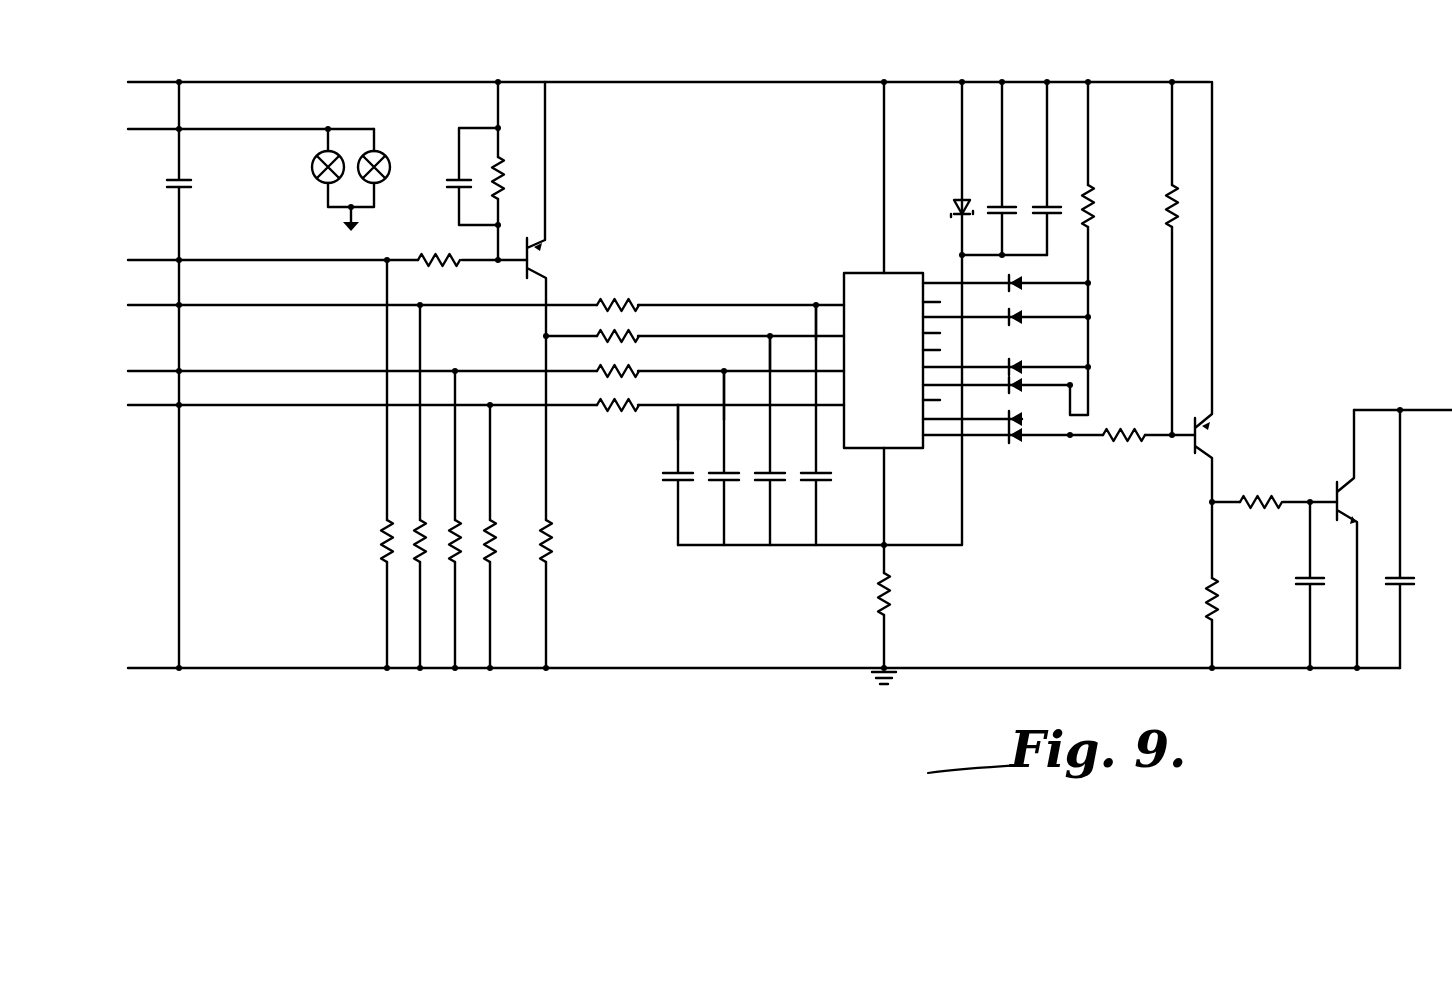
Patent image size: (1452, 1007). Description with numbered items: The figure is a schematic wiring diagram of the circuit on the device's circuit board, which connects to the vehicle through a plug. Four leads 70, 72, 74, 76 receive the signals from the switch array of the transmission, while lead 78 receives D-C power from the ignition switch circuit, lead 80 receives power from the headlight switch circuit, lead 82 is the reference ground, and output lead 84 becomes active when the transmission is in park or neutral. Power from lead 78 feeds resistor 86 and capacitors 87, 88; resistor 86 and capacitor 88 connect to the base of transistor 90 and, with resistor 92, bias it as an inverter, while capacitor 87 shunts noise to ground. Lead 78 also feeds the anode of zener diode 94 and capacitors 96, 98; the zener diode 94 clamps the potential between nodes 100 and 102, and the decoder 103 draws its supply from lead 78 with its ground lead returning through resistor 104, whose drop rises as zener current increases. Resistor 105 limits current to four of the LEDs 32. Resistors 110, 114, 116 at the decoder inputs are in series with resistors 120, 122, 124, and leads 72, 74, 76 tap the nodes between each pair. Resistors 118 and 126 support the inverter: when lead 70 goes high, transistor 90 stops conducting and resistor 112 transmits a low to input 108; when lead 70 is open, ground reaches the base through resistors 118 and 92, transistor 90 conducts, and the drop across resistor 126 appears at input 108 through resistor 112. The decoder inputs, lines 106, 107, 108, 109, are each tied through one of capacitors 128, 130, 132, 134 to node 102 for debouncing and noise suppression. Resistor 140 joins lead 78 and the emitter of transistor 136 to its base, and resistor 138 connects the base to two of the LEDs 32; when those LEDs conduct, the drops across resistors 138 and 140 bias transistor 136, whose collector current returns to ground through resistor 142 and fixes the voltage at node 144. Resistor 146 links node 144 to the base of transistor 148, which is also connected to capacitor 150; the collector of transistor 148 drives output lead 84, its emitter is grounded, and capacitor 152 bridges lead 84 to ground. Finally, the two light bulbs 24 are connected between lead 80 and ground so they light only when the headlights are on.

The light bulbs 24 is at (312, 186).
The LEDs 32 is at (1025, 283).
The lead 70 is at (152, 260).
The lead 72 is at (148, 318).
The lead 74 is at (150, 384).
The lead 76 is at (152, 407).
The lead 78 is at (128, 82).
The lead 80 is at (124, 142).
The lead 82 is at (130, 668).
The output lead 84 is at (1438, 408).
The resistor 86 is at (496, 166).
The capacitor 87 is at (168, 184).
The capacitor 88 is at (454, 180).
The transistor 90 is at (548, 266).
The resistor 92 is at (434, 256).
The zener diode 94 is at (954, 212).
The capacitor 96 is at (1000, 207).
The capacitor 98 is at (1046, 207).
The node 100 is at (898, 82).
The node 102 is at (886, 545).
The decoder 103 is at (850, 272).
The resistor 104 is at (892, 606).
The resistor 105 is at (1090, 210).
The input line 106 is at (816, 305).
The input line 107 is at (788, 320).
The input line 108 is at (724, 371).
The input line 109 is at (670, 392).
The resistor 110 is at (618, 302).
The resistor 112 is at (622, 332).
The resistor 114 is at (619, 366).
The resistor 116 is at (630, 394).
The resistor 118 is at (384, 520).
The resistor 120 is at (416, 517).
The resistor 122 is at (452, 516).
The resistor 124 is at (490, 512).
The resistor 126 is at (546, 520).
The capacitor 128 is at (670, 476).
The capacitor 130 is at (715, 484).
The capacitor 132 is at (766, 484).
The capacitor 134 is at (811, 485).
The transistor 136 is at (1208, 440).
The resistor 138 is at (1125, 438).
The resistor 140 is at (1176, 190).
The resistor 142 is at (1212, 578).
The node 144 is at (1214, 502).
The resistor 146 is at (1262, 508).
The transistor 148 is at (1346, 494).
The capacitor 150 is at (1316, 584).
The capacitor 152 is at (1418, 572).